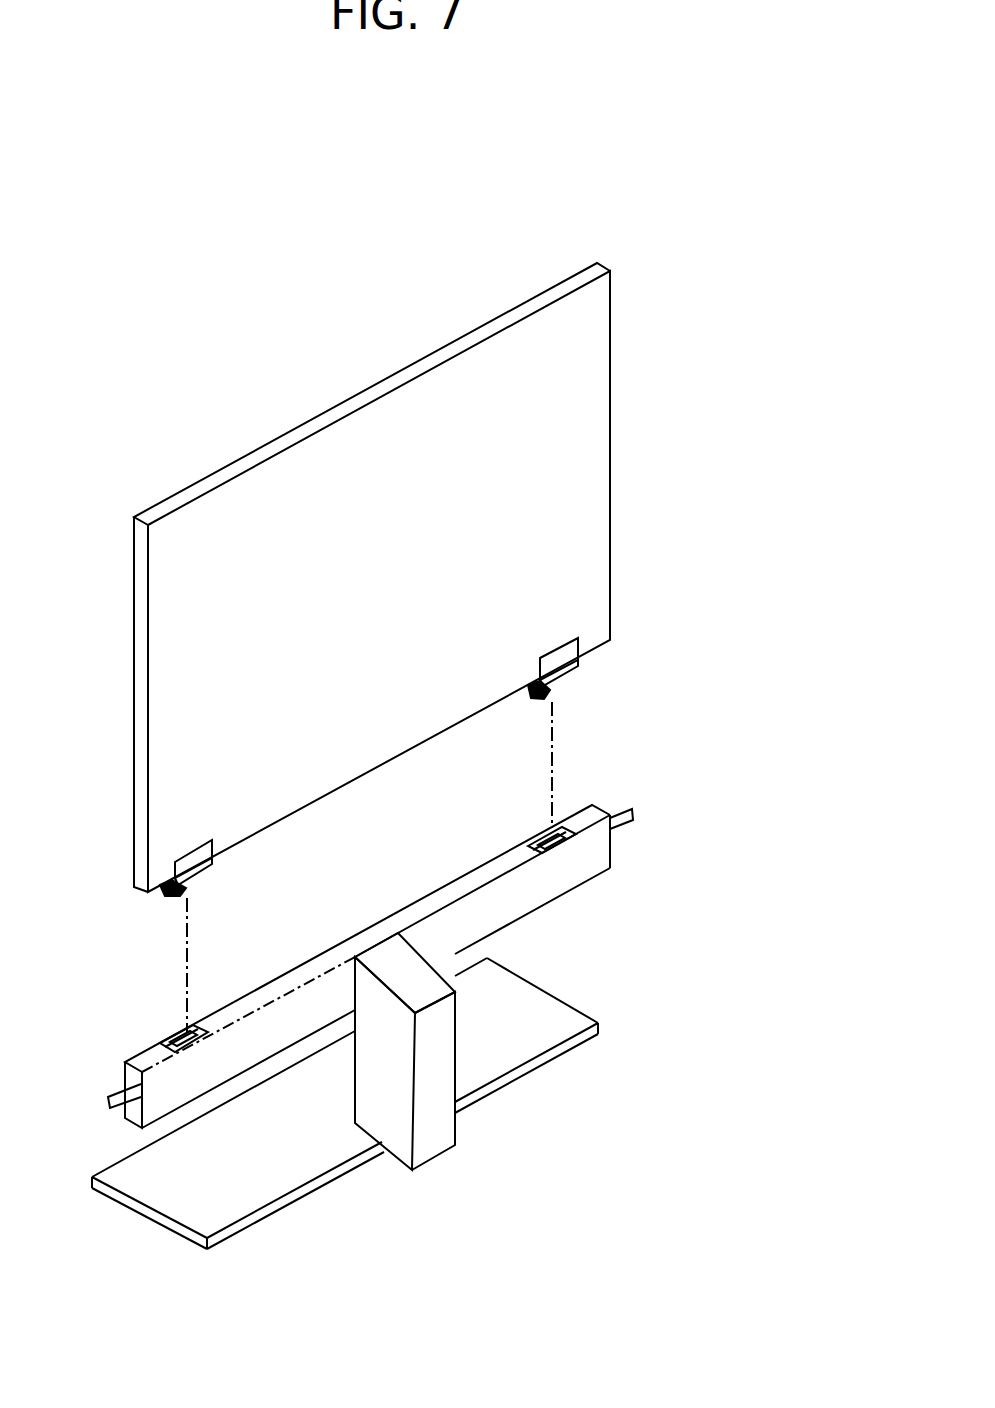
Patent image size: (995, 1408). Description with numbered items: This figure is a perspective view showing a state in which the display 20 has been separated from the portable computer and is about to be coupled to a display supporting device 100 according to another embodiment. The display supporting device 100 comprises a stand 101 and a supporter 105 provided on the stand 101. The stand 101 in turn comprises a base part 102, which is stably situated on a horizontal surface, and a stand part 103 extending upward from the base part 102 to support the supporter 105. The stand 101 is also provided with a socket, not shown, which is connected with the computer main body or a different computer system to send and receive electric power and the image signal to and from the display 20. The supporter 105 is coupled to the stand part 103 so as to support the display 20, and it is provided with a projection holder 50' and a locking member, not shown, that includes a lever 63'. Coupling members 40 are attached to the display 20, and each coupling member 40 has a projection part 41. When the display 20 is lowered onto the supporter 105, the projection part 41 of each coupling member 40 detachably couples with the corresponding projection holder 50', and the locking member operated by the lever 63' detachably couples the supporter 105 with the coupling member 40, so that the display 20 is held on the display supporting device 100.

The display 20 is at (610, 393).
The coupling member 40 is at (212, 890).
The projection part 41 is at (167, 893).
The projection holder 50' is at (301, 931).
The lever 63' is at (358, 960).
The display supporting device 100 is at (345, 1141).
The stand 101 is at (345, 1105).
The base part 102 is at (343, 1173).
The stand part 103 is at (450, 1152).
The supporter 105 is at (197, 1095).